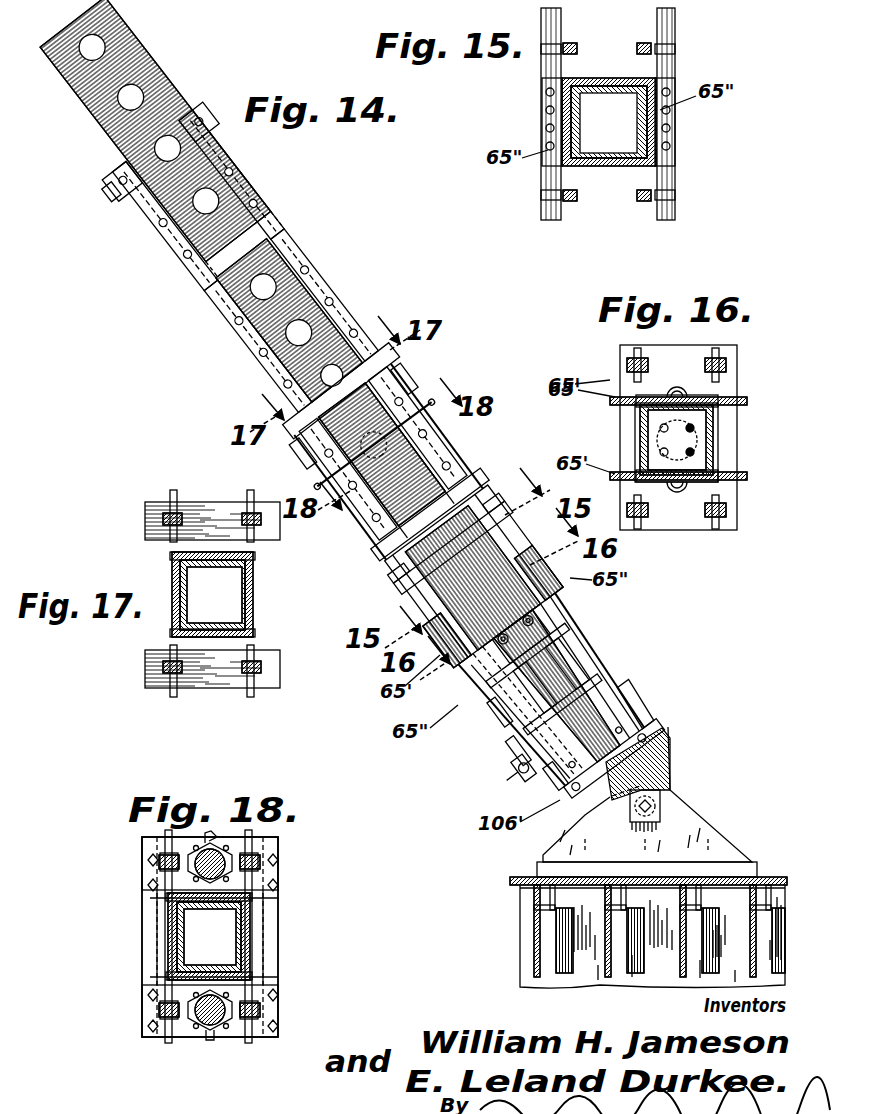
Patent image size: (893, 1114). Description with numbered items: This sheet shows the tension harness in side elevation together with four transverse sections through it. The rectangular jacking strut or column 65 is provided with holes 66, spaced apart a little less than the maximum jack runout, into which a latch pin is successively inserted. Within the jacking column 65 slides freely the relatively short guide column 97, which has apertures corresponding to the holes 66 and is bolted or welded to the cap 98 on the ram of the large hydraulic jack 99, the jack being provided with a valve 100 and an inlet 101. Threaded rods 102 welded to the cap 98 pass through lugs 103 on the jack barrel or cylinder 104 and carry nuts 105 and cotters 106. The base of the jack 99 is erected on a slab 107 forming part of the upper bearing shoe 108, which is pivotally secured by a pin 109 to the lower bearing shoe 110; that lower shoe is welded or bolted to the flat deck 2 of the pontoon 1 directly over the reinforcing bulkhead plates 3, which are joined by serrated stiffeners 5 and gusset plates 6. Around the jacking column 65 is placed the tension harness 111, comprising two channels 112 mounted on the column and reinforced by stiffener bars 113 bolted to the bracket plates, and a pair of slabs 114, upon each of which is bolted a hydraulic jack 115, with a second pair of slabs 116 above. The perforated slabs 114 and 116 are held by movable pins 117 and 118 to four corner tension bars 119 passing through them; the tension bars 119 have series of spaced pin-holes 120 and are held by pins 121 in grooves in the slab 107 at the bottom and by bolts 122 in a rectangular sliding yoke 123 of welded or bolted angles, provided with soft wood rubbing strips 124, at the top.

In FIG. 14, the pontoon 1 is at (522, 913).
In FIG. 14, the flat deck 2 is at (515, 879).
In FIG. 14, the reinforcing bulkhead plates 3 is at (522, 946).
In FIG. 14, the serrated stiffeners 5 is at (605, 920).
In FIG. 14, the gusset plates 6 is at (608, 968).
In FIG. 14, the jacking strut or column 65 is at (84, 100).
In FIG. 15, the jacking strut or column 65 is at (604, 82).
In FIG. 17, the jacking strut or column 65 is at (246, 594).
In FIG. 18, the jacking strut or column 65 is at (248, 932).
In FIG. 14, the holes 66 is at (100, 47).
In FIG. 17, the holes 66 is at (216, 570).
In FIG. 15, the guide column 97 is at (645, 130).
In FIG. 16, the guide column 97 is at (640, 428).
In FIG. 17, the guide column 97 is at (246, 606).
In FIG. 18, the guide column 97 is at (175, 924).
In FIG. 14, the cap 98 is at (555, 622).
In FIG. 14, the hydraulic jack 99 is at (600, 690).
In FIG. 16, the hydraulic jack 99 is at (712, 438).
In FIG. 14, the valve 100 is at (550, 790).
In FIG. 14, the inlet 101 is at (560, 772).
In FIG. 14, the threaded rods 102 is at (590, 665).
In FIG. 14, the lugs 103 is at (540, 700).
In FIG. 16, the lugs 103 is at (677, 388).
In FIG. 14, the jack barrel or cylinder 104 is at (520, 668).
In FIG. 14, the nuts 105 is at (560, 648).
In FIG. 16, the nuts 105 is at (695, 397).
In FIG. 14, the cotters 106 is at (622, 712).
In FIG. 14, the slab 107 is at (672, 742).
In FIG. 16, the slab 107 is at (720, 457).
In FIG. 14, the upper bearing shoe 108 is at (672, 776).
In FIG. 14, the pin 109 is at (664, 806).
In FIG. 14, the lower bearing shoe 110 is at (725, 853).
In FIG. 14, the tension harness 111 is at (318, 283).
In FIG. 15, the tension harness 111 is at (547, 118).
In FIG. 16, the tension harness 111 is at (737, 500).
In FIG. 17, the tension harness 111 is at (150, 668).
In FIG. 18, the tension harness 111 is at (280, 862).
In FIG. 14, the channels 112 is at (400, 585).
In FIG. 15, the channels 112 is at (552, 28).
In FIG. 18, the channels 112 is at (148, 948).
In FIG. 14, the stiffener bars 113 is at (530, 512).
In FIG. 15, the stiffener bars 113 is at (668, 50).
In FIG. 14, the slabs 114 is at (392, 565).
In FIG. 18, the slabs 114 is at (144, 862).
In FIG. 14, the hydraulic jack 115 is at (385, 500).
In FIG. 18, the hydraulic jack 115 is at (218, 852).
In FIG. 14, the slabs 116 is at (400, 362).
In FIG. 17, the slabs 116 is at (160, 505).
In FIG. 14, the movable pins 117 is at (392, 466).
In FIG. 18, the movable pins 117 is at (167, 835).
In FIG. 17, the movable pins 118 is at (253, 500).
In FIG. 14, the corner tension bars 119 is at (270, 218).
In FIG. 15, the corner tension bars 119 is at (642, 44).
In FIG. 16, the corner tension bars 119 is at (712, 358).
In FIG. 17, the corner tension bars 119 is at (245, 512).
In FIG. 18, the corner tension bars 119 is at (256, 858).
In FIG. 14, the pin-holes 120 is at (237, 330).
In FIG. 18, the pin-holes 120 is at (158, 865).
In FIG. 14, the pins 121 is at (580, 798).
In FIG. 16, the pins 121 is at (634, 353).
In FIG. 14, the bolts 122 is at (215, 140).
In FIG. 14, the sliding yoke 123 is at (115, 195).
In FIG. 14, the rubbing strips 124 is at (190, 112).